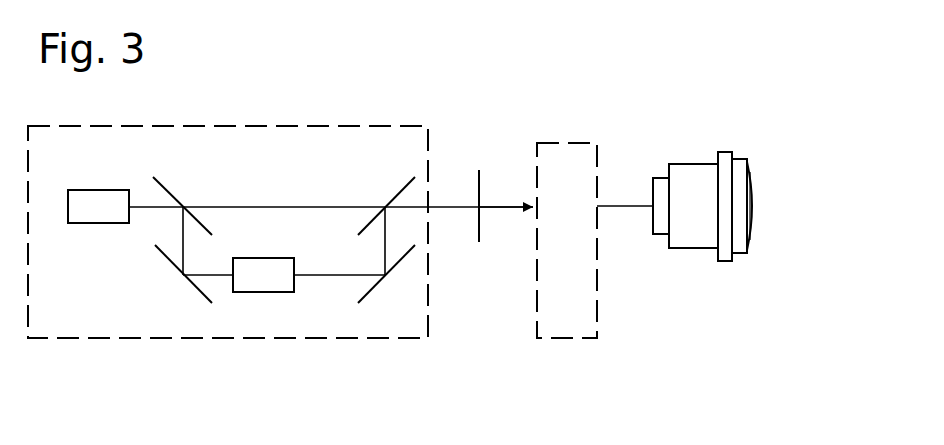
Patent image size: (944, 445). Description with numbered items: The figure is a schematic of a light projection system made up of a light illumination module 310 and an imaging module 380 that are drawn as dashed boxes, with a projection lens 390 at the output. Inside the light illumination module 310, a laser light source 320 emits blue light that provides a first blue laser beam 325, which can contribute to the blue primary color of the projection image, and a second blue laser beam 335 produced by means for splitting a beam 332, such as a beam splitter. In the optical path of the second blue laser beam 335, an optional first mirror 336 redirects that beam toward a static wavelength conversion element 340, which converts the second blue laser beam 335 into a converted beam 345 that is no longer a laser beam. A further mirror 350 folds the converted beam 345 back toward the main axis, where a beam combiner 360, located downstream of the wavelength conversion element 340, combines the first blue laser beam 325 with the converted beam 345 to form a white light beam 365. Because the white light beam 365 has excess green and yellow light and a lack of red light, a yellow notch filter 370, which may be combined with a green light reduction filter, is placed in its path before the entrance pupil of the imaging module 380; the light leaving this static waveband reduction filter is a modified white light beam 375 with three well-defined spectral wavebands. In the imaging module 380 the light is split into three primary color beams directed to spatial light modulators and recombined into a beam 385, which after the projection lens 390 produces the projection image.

The light illumination module 310 is at (119, 356).
The laser light source 320 is at (93, 185).
The first blue laser beam 325 is at (265, 202).
The means for splitting a beam 332 is at (173, 192).
The second blue laser beam 335 is at (177, 225).
The first mirror 336 is at (193, 285).
The static wavelength conversion element 340 is at (270, 295).
The converted beam 345 is at (335, 271).
The mirror 350 is at (391, 281).
The beam combiner 360 is at (383, 199).
The white light beam 365 is at (453, 197).
The yellow notch filter 370 is at (486, 243).
The modified white light beam 375 is at (515, 196).
The imaging module 380 is at (562, 353).
The beam 385 is at (629, 199).
The projection lens 390 is at (705, 154).